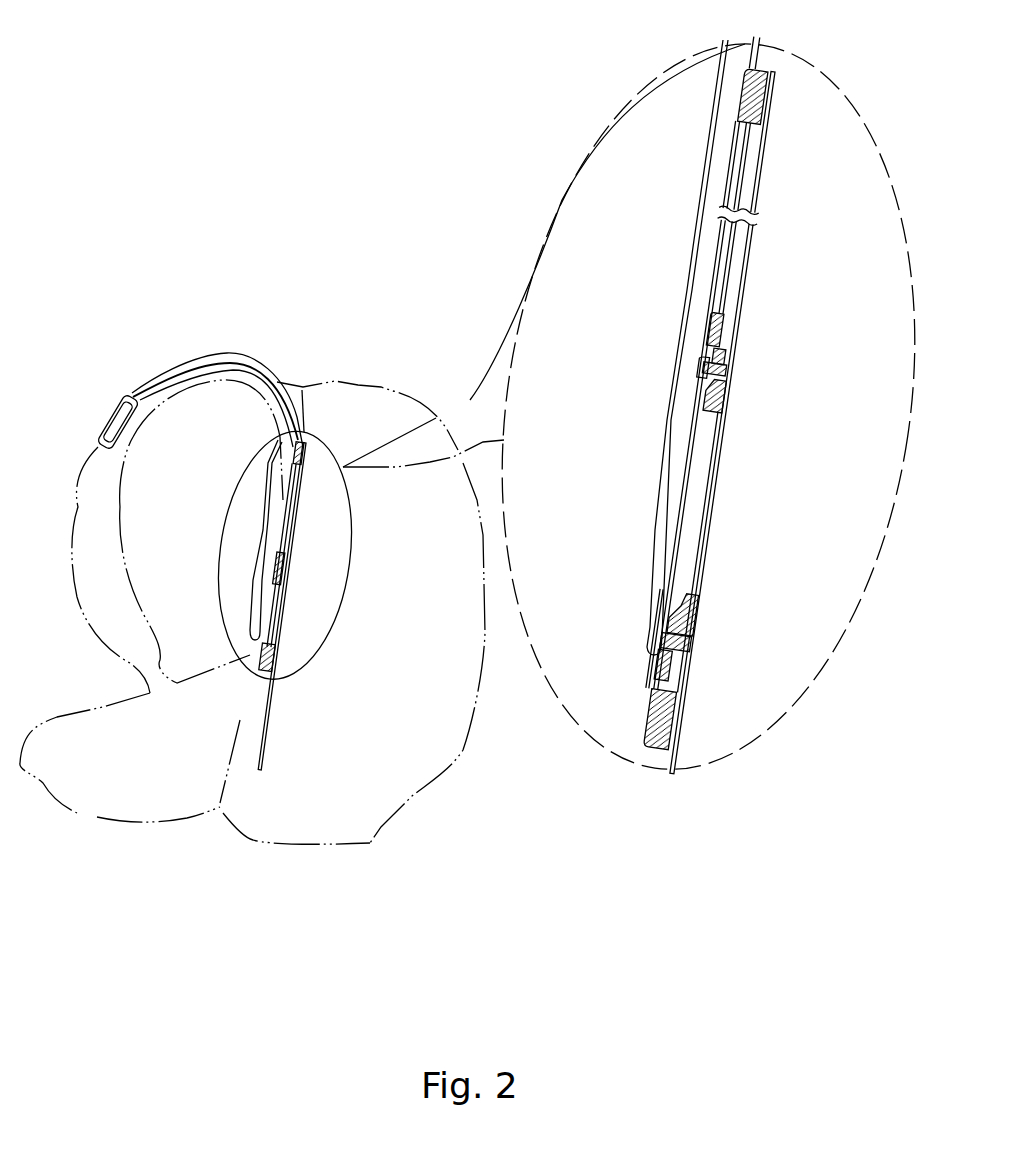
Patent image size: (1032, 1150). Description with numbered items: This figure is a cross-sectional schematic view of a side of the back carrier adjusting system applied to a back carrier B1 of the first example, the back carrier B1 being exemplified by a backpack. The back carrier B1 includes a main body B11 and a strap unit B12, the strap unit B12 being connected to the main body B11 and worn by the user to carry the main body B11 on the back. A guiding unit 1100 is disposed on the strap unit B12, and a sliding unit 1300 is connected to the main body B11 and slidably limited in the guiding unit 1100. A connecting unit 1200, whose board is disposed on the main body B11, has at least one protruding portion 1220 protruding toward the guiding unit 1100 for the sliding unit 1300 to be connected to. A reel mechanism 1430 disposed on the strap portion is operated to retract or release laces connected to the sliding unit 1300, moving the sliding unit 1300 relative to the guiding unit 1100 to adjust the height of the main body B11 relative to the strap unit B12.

The guiding unit 1100 is at (740, 97).
The connecting unit 1200 is at (760, 188).
The sliding unit 1300 is at (725, 333).
The protruding portion 1220 is at (727, 397).
The reel mechanism 1430 is at (105, 425).
The back carrier B1 is at (322, 226).
The main body B11 is at (337, 382).
The strap unit B12 is at (230, 353).